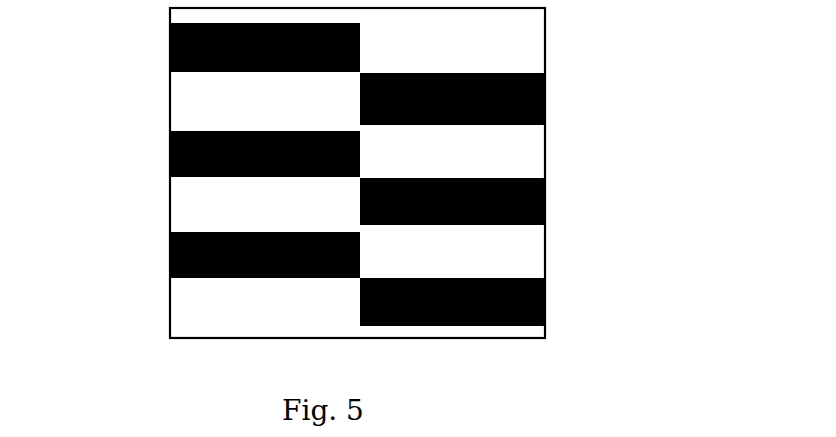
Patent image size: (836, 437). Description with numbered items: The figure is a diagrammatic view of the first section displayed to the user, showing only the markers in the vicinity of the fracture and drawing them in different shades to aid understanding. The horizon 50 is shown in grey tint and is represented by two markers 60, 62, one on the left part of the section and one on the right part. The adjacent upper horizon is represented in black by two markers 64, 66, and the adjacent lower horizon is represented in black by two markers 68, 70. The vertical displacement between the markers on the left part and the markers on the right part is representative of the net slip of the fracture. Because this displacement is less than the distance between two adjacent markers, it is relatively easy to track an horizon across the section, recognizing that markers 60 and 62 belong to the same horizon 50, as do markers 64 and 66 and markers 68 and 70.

The horizon 50 is at (552, 214).
The marker 60 is at (170, 160).
The marker 62 is at (515, 172).
The marker 64 is at (170, 38).
The marker 66 is at (545, 94).
The marker 68 is at (170, 265).
The marker 70 is at (515, 276).